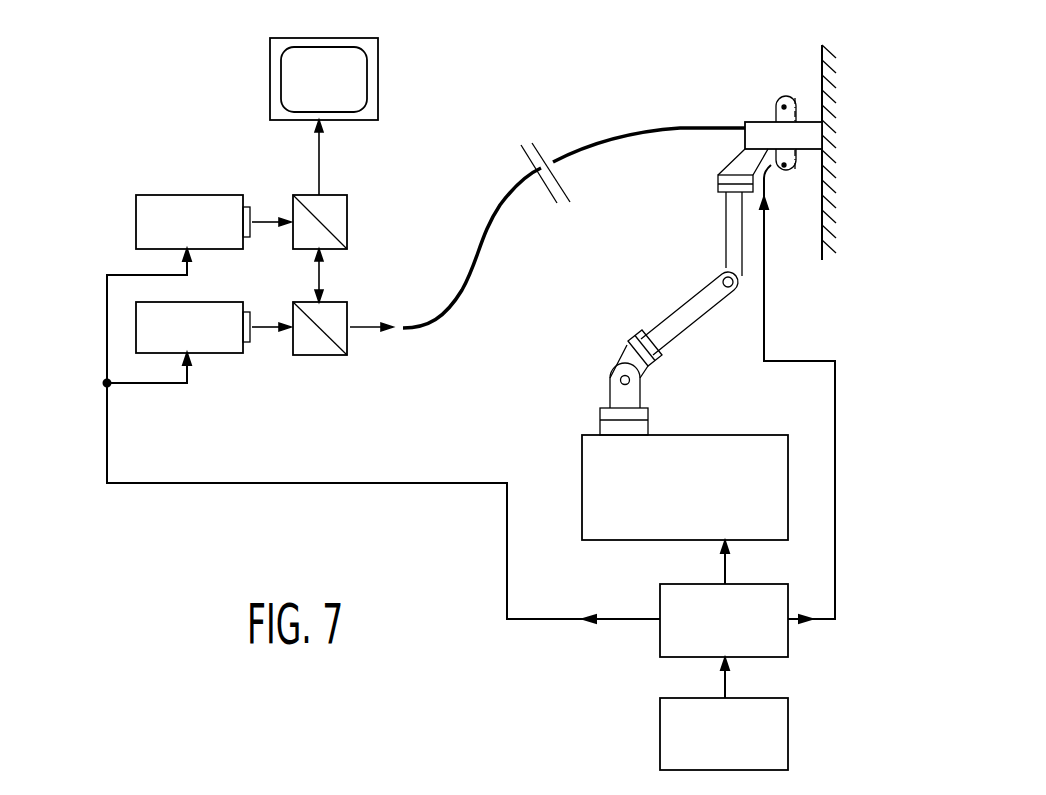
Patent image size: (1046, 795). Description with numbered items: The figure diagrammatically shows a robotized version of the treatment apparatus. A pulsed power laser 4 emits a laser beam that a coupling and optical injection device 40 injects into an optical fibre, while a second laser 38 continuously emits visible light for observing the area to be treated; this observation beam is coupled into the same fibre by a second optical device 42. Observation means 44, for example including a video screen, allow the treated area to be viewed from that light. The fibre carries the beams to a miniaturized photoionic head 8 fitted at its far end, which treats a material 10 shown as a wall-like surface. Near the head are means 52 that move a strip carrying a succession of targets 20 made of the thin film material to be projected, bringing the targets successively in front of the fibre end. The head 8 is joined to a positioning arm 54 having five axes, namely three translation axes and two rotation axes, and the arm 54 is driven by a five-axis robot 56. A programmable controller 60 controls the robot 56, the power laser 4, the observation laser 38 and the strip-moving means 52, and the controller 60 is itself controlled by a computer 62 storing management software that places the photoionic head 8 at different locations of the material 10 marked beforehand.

The power laser 4 is at (217, 357).
The photoionic head 8 is at (745, 109).
The material 10 is at (828, 62).
The targets 20 is at (612, 140).
The observation laser 38 is at (193, 203).
The coupling and optical injection device 40 is at (310, 356).
The second optical device 42 is at (343, 210).
The observation means 44 is at (283, 84).
The strip moving means 52 is at (796, 97).
The positioning arm 54 is at (726, 234).
The robot 56 is at (693, 501).
The programmable controller 60 is at (737, 633).
The computer 62 is at (737, 748).